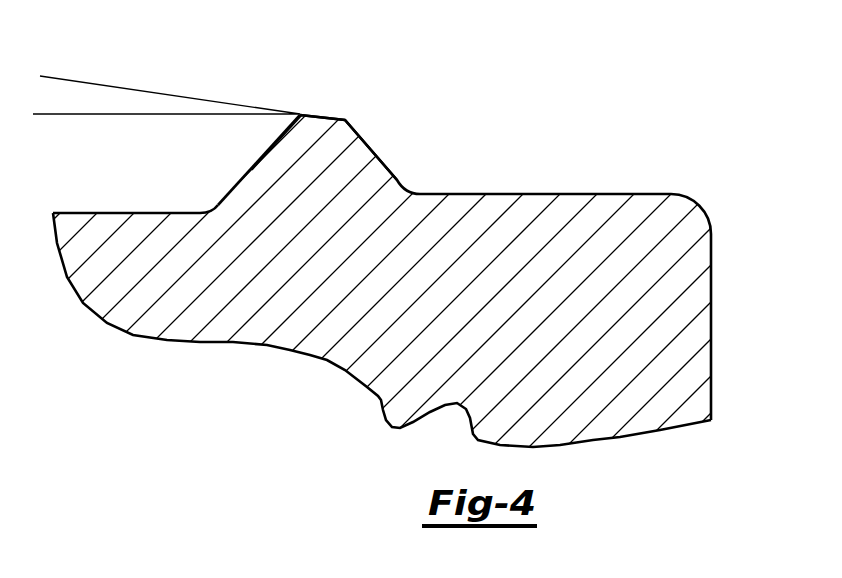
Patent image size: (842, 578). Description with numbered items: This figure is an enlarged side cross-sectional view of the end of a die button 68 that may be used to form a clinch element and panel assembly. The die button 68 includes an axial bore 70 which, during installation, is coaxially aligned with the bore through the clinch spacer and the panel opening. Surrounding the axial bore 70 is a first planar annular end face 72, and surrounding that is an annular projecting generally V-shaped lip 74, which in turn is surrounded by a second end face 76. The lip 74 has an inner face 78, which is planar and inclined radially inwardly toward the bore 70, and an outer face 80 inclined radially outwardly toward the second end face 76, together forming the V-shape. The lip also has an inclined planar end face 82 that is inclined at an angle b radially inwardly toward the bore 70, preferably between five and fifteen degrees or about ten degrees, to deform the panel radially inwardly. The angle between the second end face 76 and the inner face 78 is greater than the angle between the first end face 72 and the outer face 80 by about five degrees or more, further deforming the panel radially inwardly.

The die button 68 is at (644, 160).
The axial bore 70 is at (712, 288).
The first planar annular end face 72 is at (572, 193).
The annular projecting generally V-shaped lip 74 is at (326, 152).
The second end face 76 is at (124, 212).
The inner face 78 is at (375, 146).
The outer face 80 is at (268, 150).
The inclined planar end face 82 is at (326, 115).